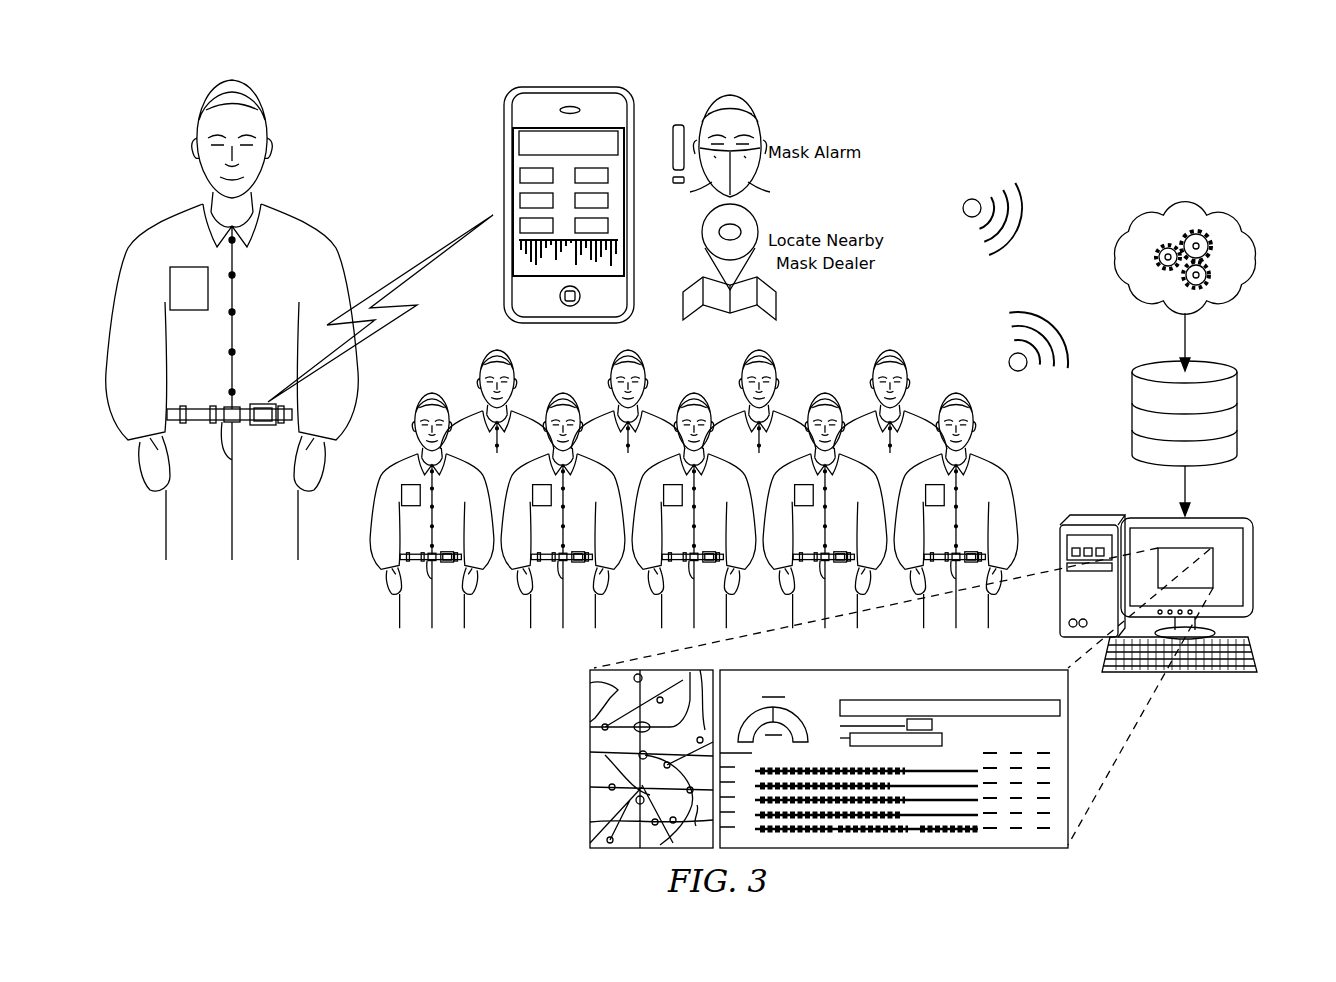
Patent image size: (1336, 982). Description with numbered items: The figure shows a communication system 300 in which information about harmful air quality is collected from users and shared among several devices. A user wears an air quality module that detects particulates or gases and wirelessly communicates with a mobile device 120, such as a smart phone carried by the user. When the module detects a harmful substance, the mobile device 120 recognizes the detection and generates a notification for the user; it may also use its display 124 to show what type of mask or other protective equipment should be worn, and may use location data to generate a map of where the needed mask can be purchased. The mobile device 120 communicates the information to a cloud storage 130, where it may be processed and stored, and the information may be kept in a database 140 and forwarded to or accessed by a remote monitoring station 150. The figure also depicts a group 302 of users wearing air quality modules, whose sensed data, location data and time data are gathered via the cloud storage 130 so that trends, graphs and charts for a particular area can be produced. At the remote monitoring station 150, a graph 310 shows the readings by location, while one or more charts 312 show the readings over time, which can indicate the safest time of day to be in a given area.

The mobile device 120 is at (535, 205).
The display 124 is at (531, 147).
The cloud storage 130 is at (1224, 298).
The database 140 is at (1238, 386).
The remote monitoring station 150 is at (1254, 566).
The communication system 300 is at (1070, 138).
The group of users 302 is at (805, 340).
The graph 310 is at (590, 722).
The charts 312 is at (1068, 712).